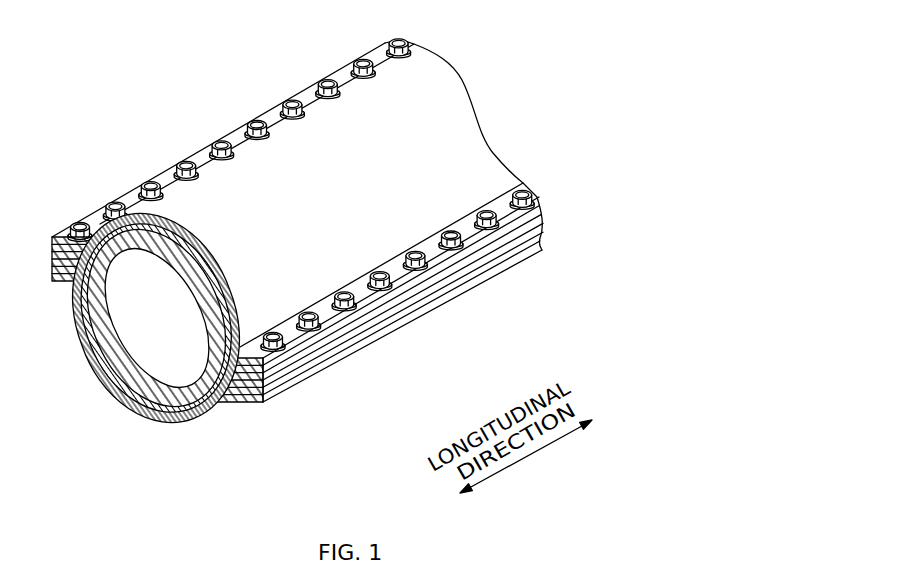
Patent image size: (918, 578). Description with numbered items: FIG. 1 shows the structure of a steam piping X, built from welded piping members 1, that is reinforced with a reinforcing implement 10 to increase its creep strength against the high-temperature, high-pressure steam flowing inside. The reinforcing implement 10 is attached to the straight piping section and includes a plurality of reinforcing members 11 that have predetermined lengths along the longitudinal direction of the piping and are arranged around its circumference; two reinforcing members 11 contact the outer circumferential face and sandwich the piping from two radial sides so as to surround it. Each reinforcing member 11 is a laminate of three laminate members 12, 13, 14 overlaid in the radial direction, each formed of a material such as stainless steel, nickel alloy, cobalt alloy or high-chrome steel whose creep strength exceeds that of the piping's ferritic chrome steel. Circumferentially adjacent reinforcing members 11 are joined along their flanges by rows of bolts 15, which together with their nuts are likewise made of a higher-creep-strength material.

The piping member 1 is at (135, 398).
The reinforcing implement 10 is at (481, 75).
The reinforcing member 11 is at (456, 348).
The laminate member 12 is at (337, 322).
The laminate member 13 is at (357, 317).
The laminate member 14 is at (377, 313).
The bolt 15 is at (462, 231).